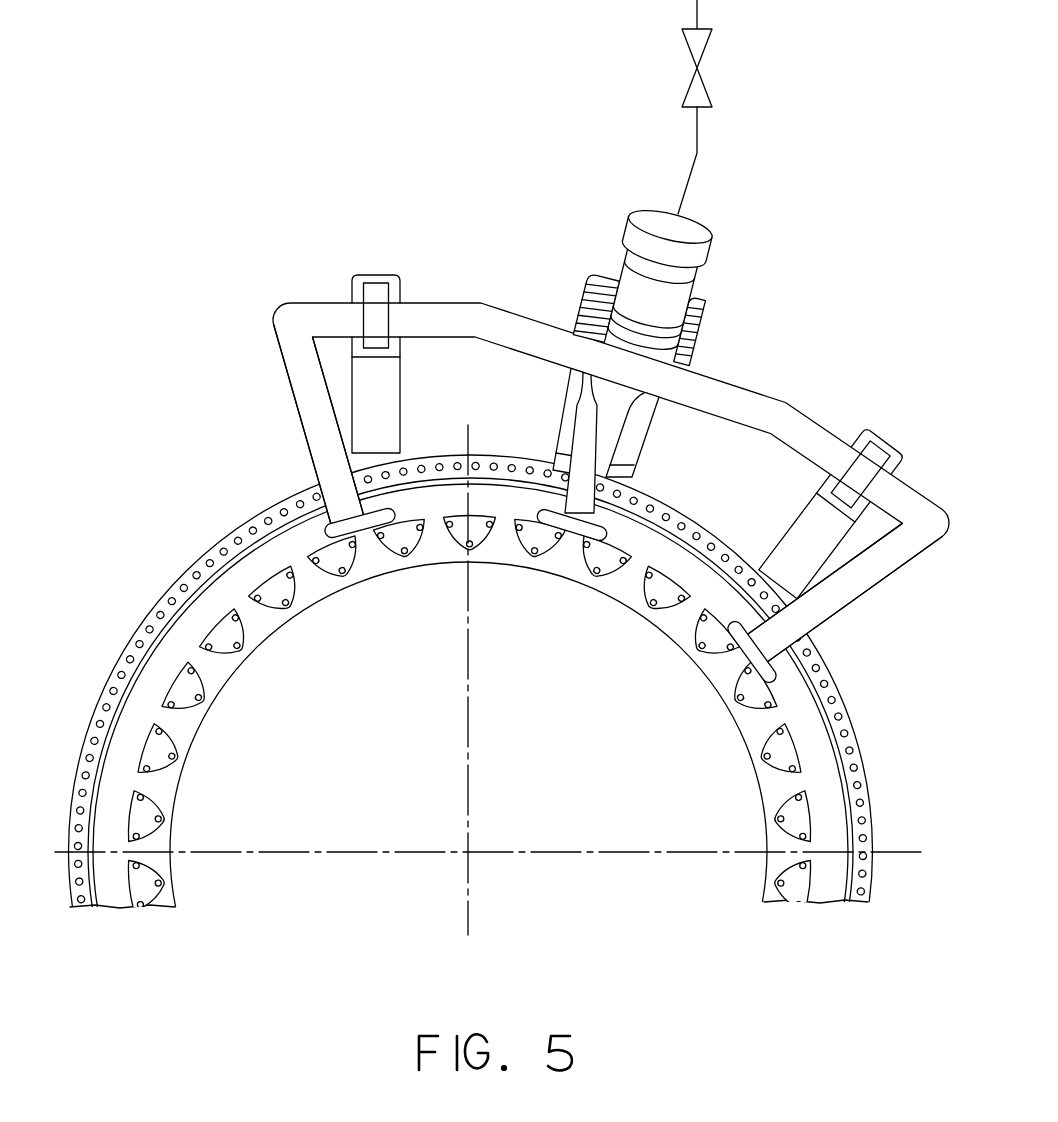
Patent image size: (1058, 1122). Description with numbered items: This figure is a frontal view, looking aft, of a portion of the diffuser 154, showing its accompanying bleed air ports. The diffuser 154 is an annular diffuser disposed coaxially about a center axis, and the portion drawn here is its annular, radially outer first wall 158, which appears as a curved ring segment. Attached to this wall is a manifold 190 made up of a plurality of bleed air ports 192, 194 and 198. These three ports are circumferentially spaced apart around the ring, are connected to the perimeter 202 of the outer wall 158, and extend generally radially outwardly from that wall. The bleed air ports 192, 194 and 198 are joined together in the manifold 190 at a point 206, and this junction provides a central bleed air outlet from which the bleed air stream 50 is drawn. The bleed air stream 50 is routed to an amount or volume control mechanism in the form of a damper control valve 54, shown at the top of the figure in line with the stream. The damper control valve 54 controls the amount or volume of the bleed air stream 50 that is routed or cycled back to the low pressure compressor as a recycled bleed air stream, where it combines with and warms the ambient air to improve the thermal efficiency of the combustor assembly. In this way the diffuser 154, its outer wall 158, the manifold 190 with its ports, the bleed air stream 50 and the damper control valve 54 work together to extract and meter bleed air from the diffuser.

The bleed air stream 50 is at (688, 187).
The damper control valve 54 is at (707, 87).
The diffuser 154 is at (190, 915).
The first wall 158 is at (197, 742).
The manifold 190 is at (457, 273).
The bleed air port 192 is at (312, 404).
The bleed air port 194 is at (612, 447).
The bleed air port 198 is at (843, 598).
The perimeter 202 is at (319, 606).
The joining point 206 is at (652, 378).